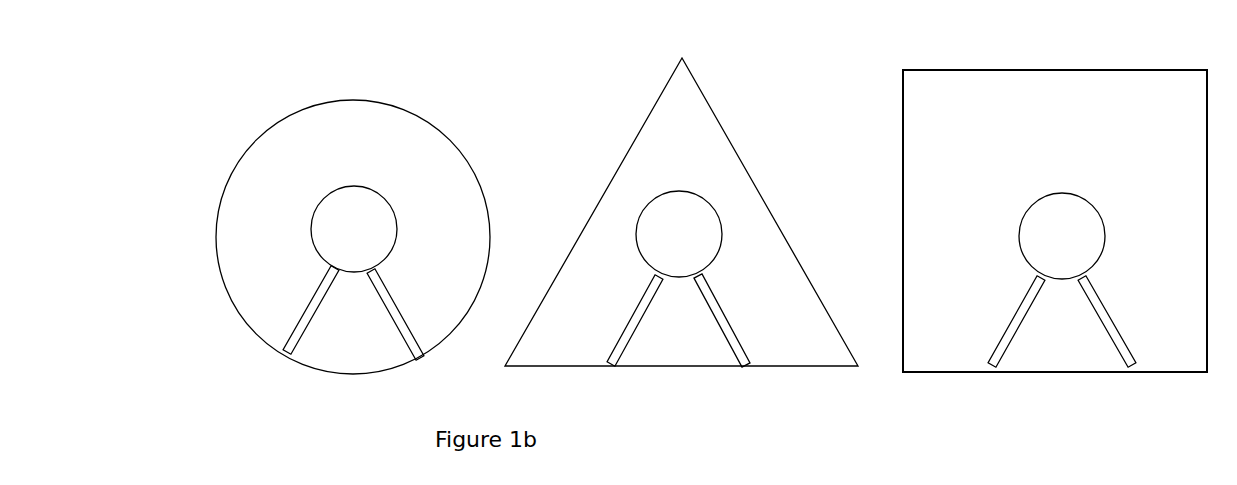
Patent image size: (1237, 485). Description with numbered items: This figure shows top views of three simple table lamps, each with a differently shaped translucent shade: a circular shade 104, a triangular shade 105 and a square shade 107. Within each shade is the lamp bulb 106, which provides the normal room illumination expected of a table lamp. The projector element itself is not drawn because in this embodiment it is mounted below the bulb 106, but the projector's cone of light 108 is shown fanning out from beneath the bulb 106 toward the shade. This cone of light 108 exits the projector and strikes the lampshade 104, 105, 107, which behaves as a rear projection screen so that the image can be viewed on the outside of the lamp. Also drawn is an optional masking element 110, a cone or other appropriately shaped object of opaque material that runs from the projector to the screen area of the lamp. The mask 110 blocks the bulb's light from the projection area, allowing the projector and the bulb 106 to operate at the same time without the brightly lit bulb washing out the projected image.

The circular shade 104 is at (297, 110).
The triangular shade 105 is at (648, 113).
The square shade 107 is at (903, 122).
The lamp bulb 106 is at (357, 240).
The projector's cone of light 108 is at (684, 331).
The masking element 110 is at (307, 298).